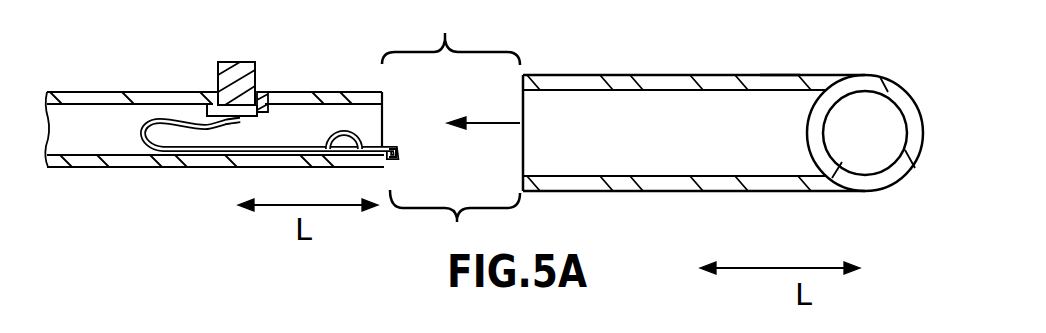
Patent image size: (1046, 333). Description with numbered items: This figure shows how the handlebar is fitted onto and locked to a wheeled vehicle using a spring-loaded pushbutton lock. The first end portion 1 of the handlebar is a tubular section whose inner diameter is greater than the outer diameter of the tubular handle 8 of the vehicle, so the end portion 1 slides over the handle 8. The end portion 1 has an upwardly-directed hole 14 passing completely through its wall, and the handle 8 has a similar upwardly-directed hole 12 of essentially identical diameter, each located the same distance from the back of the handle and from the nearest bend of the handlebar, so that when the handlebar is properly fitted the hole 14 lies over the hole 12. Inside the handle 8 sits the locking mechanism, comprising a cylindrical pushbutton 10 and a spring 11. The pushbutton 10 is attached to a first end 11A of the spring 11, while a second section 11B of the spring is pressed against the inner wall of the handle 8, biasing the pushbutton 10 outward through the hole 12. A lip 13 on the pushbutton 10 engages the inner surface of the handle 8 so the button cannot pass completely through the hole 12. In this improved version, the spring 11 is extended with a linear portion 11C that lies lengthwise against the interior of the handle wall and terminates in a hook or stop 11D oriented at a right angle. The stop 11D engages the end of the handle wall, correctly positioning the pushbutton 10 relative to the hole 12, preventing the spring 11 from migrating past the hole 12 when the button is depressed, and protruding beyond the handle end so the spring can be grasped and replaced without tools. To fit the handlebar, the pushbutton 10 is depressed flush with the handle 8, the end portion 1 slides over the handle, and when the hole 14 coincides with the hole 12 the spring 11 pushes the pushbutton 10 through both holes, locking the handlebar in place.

The first end portion of the handlebar 1 is at (705, 193).
The tubular handle 8 is at (135, 91).
The pushbutton 10 is at (246, 62).
The spring 11 is at (148, 118).
The first end of the spring 11A is at (237, 152).
The second section of the spring 11B is at (206, 154).
The linear portion of the spring 11C is at (383, 161).
The stop 11D is at (385, 152).
The hole in the handle 12 is at (260, 98).
The lip 13 is at (297, 105).
The hole in the handlebar 14 is at (770, 75).